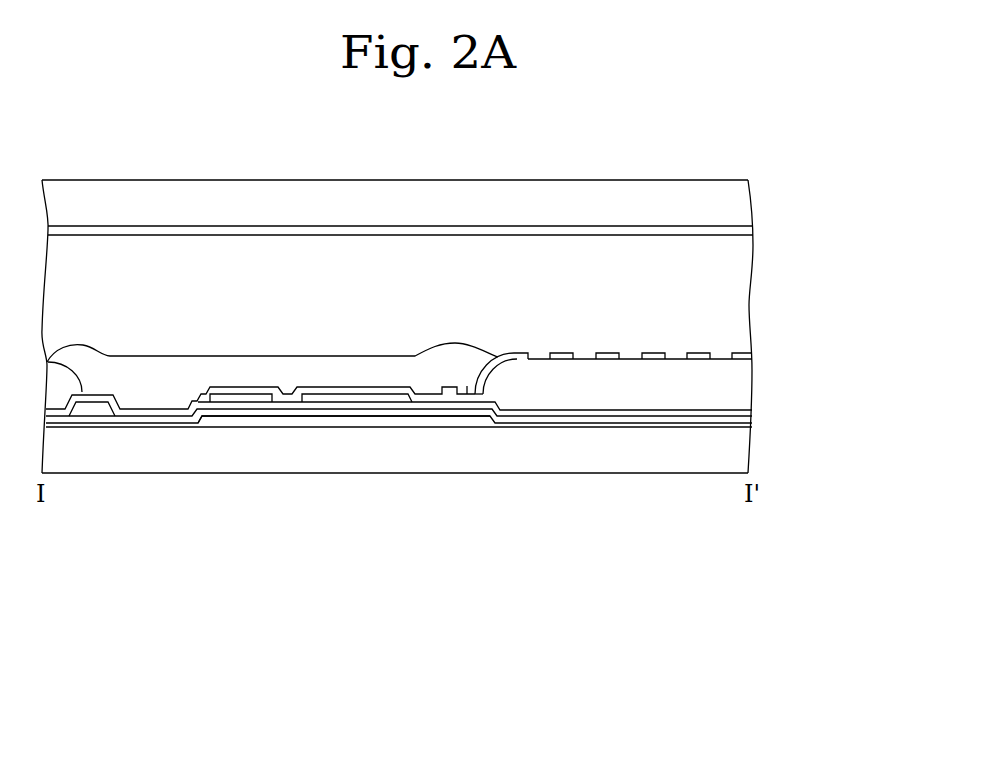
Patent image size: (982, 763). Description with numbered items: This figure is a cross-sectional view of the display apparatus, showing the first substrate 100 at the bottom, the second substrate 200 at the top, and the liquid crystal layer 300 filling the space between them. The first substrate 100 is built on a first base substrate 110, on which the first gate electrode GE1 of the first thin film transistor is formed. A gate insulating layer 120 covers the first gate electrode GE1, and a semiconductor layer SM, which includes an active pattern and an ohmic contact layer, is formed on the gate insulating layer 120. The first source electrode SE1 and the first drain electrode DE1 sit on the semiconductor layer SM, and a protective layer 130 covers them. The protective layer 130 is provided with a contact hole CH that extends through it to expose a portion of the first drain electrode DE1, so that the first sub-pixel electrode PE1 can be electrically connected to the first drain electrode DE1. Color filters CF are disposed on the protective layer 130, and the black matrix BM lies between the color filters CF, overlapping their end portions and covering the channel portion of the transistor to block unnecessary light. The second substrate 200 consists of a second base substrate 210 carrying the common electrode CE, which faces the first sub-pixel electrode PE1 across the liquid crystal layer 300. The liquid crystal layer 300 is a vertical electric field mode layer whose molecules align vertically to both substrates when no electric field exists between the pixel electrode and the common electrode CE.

The second substrate 200 is at (833, 193).
The second base substrate 210 is at (740, 203).
The common electrode CE is at (740, 233).
The liquid crystal layer 300 is at (740, 300).
The first substrate 100 is at (833, 355).
The first base substrate 110 is at (740, 452).
The gate insulating layer 120 is at (743, 419).
The protective layer 130 is at (745, 415).
The first gate electrode GE1 is at (283, 425).
The semiconductor layer SM is at (328, 388).
The first source electrode SE1 is at (218, 397).
The first drain electrode DE1 is at (382, 396).
The first sub-pixel electrode PE1 is at (517, 359).
The color filters CF is at (745, 378).
The black matrix BM is at (147, 390).
The contact holes CH is at (467, 393).